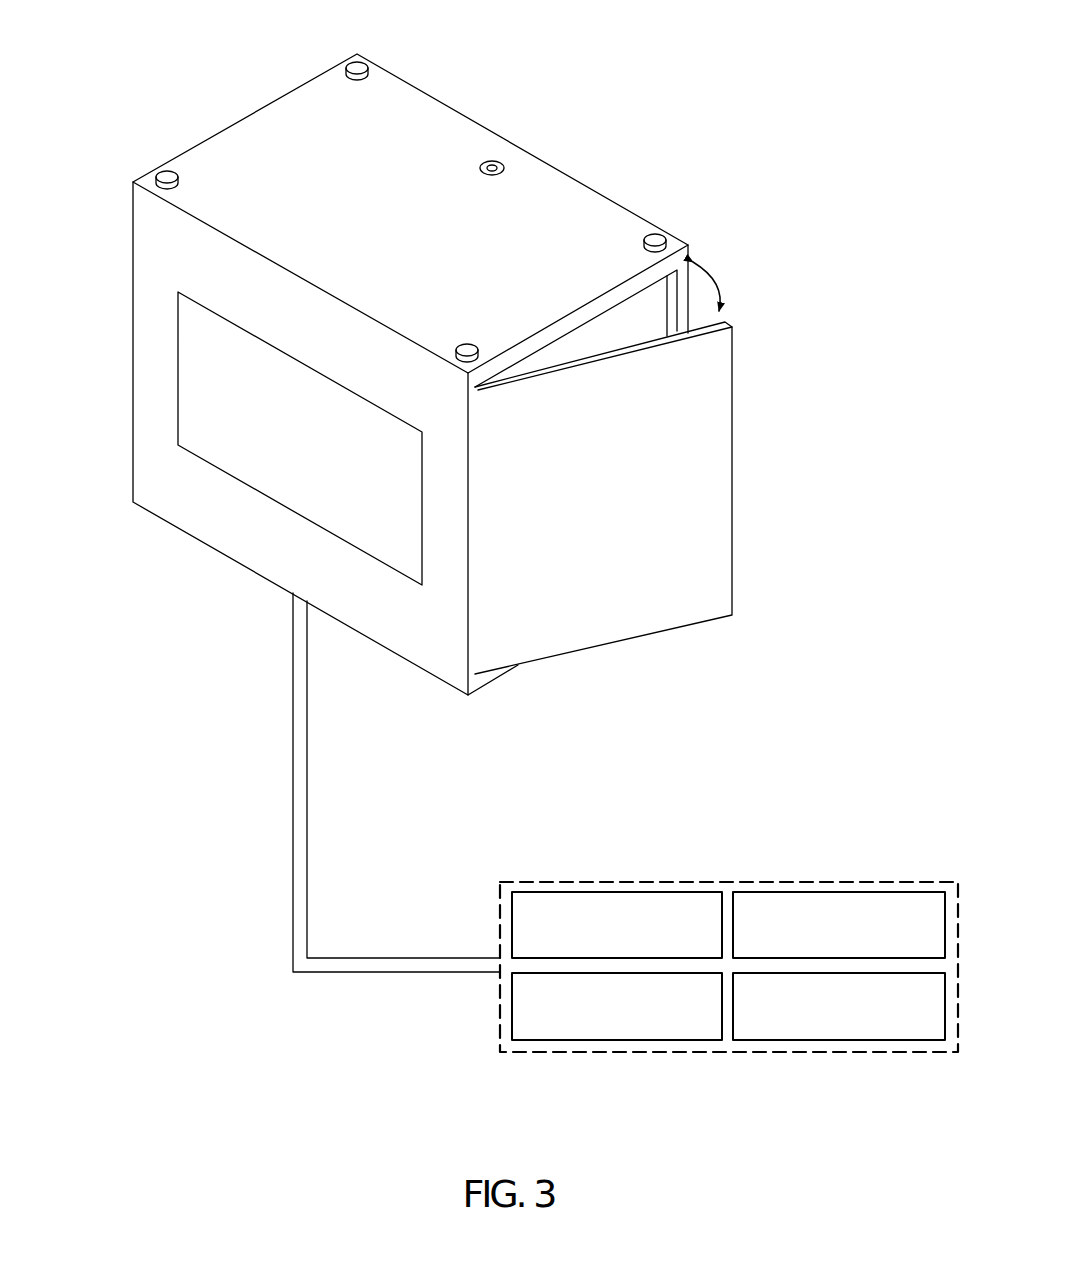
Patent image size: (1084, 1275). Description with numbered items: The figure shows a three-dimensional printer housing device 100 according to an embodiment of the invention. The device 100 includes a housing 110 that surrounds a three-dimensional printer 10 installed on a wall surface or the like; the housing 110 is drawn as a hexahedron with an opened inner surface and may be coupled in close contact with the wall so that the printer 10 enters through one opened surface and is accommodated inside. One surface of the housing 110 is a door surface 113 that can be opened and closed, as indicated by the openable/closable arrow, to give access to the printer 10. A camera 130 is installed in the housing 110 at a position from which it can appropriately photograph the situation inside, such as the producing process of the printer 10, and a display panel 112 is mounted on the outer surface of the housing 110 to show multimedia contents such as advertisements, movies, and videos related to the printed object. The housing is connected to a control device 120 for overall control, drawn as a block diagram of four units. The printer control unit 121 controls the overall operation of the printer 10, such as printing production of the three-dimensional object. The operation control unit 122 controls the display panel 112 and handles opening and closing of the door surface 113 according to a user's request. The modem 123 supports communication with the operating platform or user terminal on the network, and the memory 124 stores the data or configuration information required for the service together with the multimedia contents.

The 3D printer housing device 100 is at (617, 39).
The 3D printer 10 is at (603, 163).
The housing 110 is at (150, 221).
The display panel 112 is at (202, 357).
The door surface 113 is at (733, 482).
The camera 130 is at (492, 160).
The control device 120 is at (730, 882).
The printer control unit 121 is at (617, 892).
The operation control unit 122 is at (618, 1040).
The modem 123 is at (839, 892).
The memory 124 is at (840, 1040).